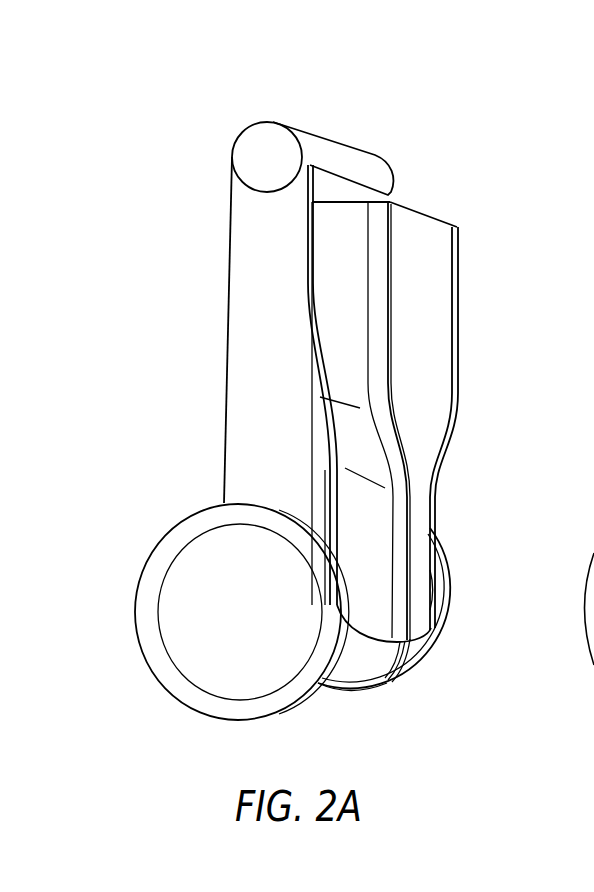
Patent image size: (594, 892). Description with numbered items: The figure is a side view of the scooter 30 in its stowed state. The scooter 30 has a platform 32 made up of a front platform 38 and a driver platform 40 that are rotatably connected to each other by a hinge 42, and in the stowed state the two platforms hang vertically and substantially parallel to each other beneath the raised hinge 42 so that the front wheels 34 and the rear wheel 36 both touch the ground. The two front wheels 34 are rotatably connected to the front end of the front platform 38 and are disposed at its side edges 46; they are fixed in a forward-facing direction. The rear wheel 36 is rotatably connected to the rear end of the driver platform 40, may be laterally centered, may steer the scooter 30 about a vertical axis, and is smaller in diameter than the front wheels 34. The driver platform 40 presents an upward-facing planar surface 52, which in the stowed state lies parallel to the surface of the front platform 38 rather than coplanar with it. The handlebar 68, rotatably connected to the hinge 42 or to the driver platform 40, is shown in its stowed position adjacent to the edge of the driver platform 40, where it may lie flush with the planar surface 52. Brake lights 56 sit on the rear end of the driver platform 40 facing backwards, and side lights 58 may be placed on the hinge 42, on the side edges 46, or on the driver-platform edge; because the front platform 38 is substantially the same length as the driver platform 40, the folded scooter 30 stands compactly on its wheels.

The scooter 30 is at (120, 138).
The platform 32 is at (544, 57).
The front wheels 34 is at (168, 533).
The rear wheel 36 is at (368, 698).
The front platform 38 is at (232, 192).
The driver platform 40 is at (460, 253).
The hinge 42 is at (347, 142).
The side edges 46 is at (250, 327).
The planar surface 52 is at (422, 345).
The brake lights 56 is at (410, 640).
The side lights 58 is at (262, 172).
The handlebar 68 is at (463, 315).